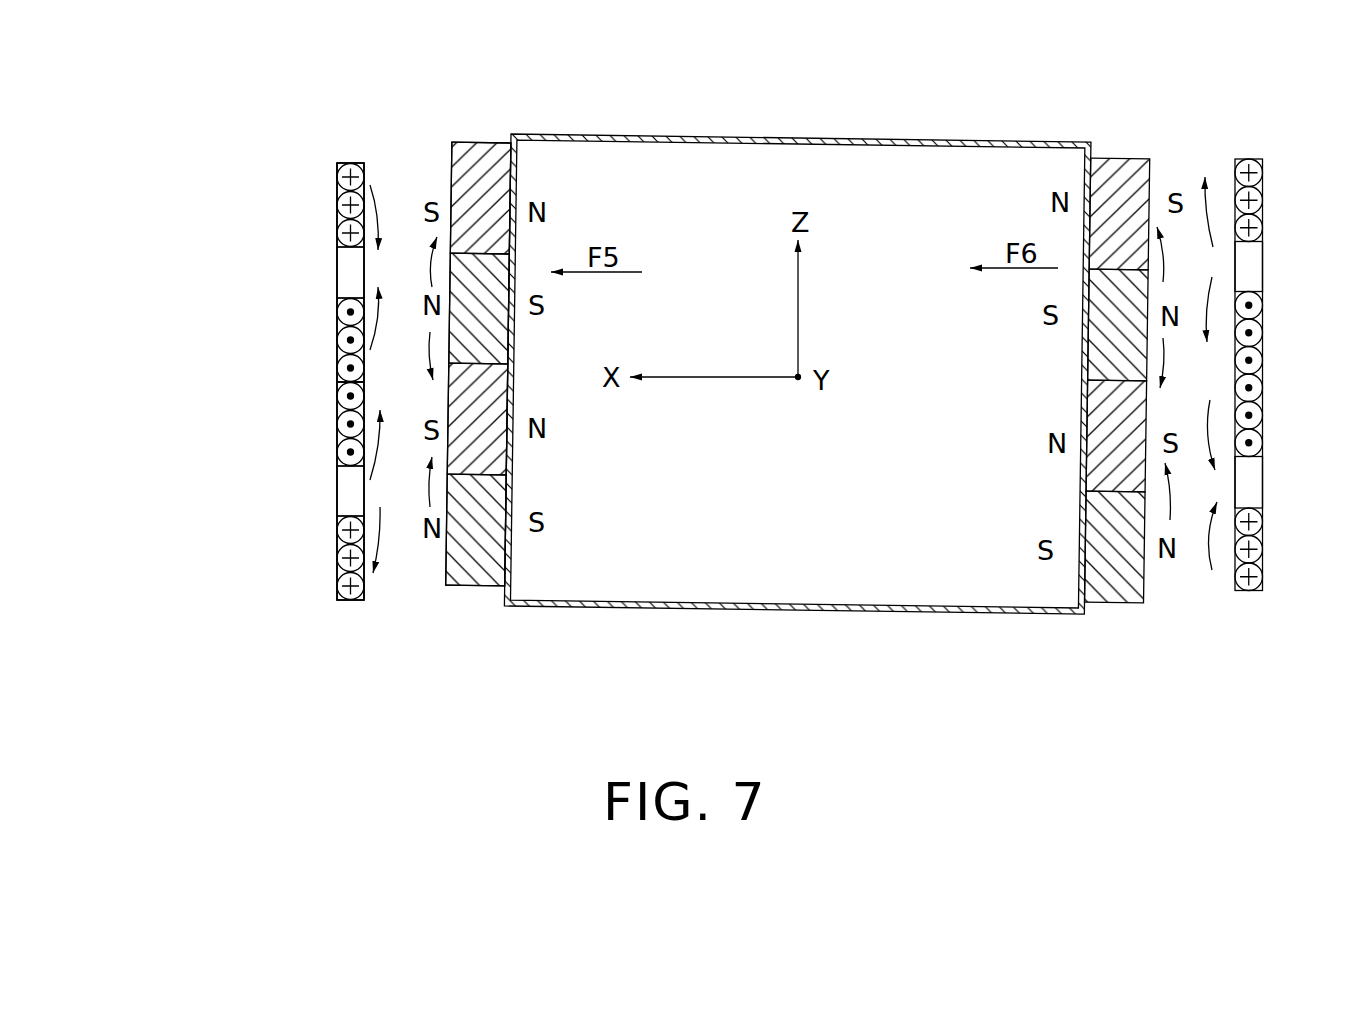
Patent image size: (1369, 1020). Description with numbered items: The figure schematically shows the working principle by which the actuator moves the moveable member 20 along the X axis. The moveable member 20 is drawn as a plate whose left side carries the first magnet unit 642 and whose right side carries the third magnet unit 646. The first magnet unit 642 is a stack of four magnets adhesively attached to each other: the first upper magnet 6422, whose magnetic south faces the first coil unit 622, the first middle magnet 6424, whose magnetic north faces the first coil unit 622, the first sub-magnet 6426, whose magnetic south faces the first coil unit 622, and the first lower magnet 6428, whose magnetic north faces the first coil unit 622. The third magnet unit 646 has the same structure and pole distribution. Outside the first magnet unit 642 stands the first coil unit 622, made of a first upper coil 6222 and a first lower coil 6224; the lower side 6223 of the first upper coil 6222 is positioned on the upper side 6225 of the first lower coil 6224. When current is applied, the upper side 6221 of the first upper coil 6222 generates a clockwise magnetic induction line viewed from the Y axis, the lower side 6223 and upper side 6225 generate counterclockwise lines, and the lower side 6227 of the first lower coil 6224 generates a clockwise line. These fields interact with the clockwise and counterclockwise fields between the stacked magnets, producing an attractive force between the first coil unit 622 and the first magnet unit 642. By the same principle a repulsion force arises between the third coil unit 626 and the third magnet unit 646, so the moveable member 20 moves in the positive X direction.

The moveable member 20 is at (753, 142).
The first magnet unit 642 is at (473, 145).
The first upper magnet 6422 is at (497, 173).
The first middle magnet 6424 is at (493, 323).
The first sub-magnet 6426 is at (468, 423).
The first lower magnet 6428 is at (483, 498).
The third magnet unit 646 is at (1117, 157).
The first coil unit 622 is at (132, 263).
The first upper coil 6222 is at (235, 233).
The upper side of the first upper coil 6221 is at (337, 234).
The lower side of the first upper coil 6223 is at (337, 312).
The first lower coil 6224 is at (232, 442).
The upper side of the first lower coil 6225 is at (337, 452).
The lower side of the first lower coil 6227 is at (337, 530).
The third coil unit 626 is at (1262, 212).